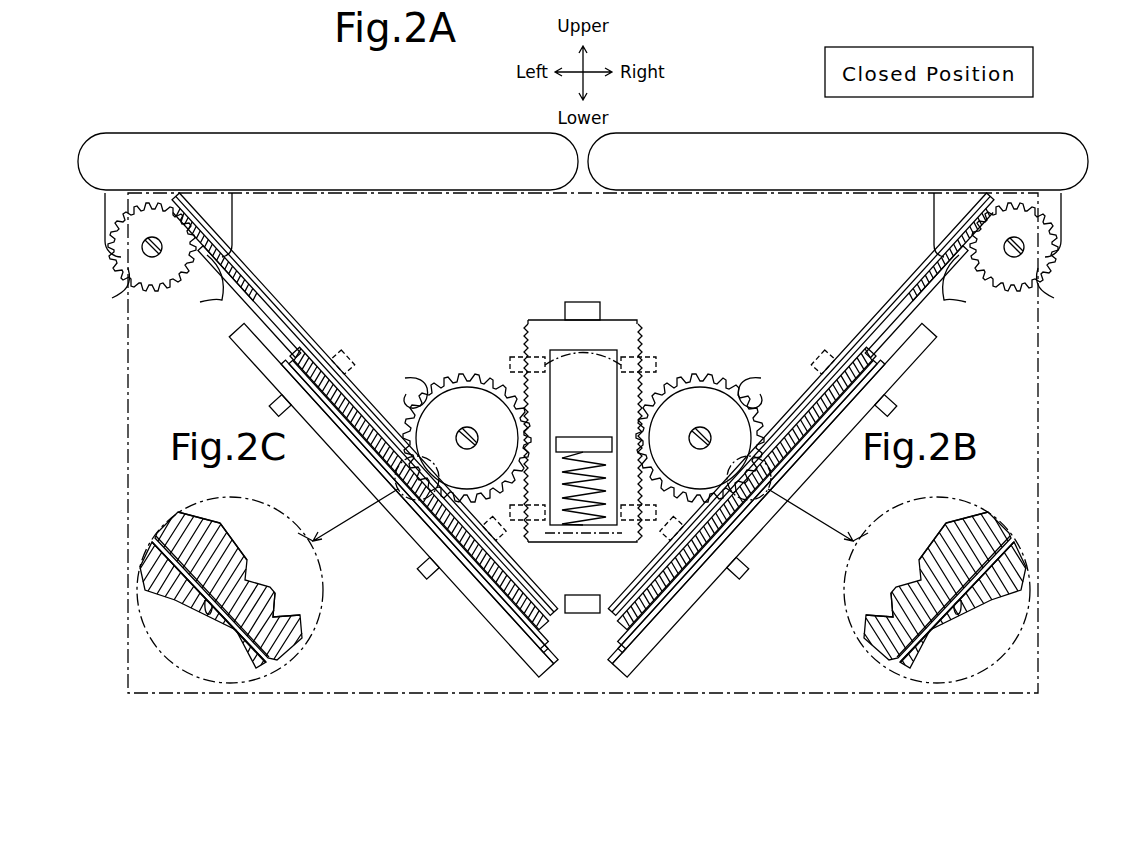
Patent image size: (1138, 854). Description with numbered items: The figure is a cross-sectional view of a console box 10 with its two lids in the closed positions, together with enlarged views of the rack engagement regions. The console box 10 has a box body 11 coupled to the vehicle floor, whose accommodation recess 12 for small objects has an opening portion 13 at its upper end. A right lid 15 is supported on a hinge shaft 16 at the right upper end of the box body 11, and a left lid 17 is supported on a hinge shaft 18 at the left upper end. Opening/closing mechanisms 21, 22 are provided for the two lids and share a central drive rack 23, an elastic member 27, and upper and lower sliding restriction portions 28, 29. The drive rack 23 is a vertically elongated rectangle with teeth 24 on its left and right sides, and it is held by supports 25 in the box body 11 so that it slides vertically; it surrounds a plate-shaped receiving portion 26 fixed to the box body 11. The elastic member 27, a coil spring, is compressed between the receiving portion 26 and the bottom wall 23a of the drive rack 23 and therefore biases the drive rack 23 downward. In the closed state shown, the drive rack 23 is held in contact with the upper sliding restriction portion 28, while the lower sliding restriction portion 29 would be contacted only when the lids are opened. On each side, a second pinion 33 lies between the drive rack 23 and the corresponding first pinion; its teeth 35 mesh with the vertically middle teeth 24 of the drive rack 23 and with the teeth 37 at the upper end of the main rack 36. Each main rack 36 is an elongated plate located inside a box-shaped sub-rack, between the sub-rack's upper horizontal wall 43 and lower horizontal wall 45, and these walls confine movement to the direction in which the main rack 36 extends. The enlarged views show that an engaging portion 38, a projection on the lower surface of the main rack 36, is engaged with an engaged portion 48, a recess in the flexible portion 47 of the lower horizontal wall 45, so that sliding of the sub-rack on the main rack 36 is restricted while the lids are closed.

In FIG. 2A, the console box 10 is at (227, 107).
In FIG. 2A, the box body 11 is at (1040, 410).
In FIG. 2A, the accommodation recess 12 is at (736, 233).
In FIG. 2A, the opening portion 13 is at (688, 233).
In FIG. 2A, the right lid 15 is at (722, 133).
In FIG. 2A, the hinge shaft 16 is at (1020, 247).
In FIG. 2A, the left lid 17 is at (156, 133).
In FIG. 2A, the hinge shaft 18 is at (150, 256).
In FIG. 2A, the opening/closing mechanism 21 is at (768, 321).
In FIG. 2A, the opening/closing mechanism 22 is at (407, 325).
In FIG. 2A, the drive rack 23 is at (620, 320).
In FIG. 2A, the bottom wall 23a is at (618, 542).
In FIG. 2A, the teeth 24 is at (530, 357).
In FIG. 2A, the supports 25 is at (583, 350).
In FIG. 2A, the receiving portion 26 is at (570, 437).
In FIG. 2A, the elastic member 27 is at (598, 456).
In FIG. 2A, the upper sliding restriction portion 28 is at (585, 302).
In FIG. 2A, the lower sliding restriction portion 29 is at (586, 613).
In FIG. 2C, the second pinion 33 is at (298, 533).
In FIG. 2B, the second pinion 33 is at (861, 515).
In FIG. 2C, the teeth 35 is at (160, 548).
In FIG. 2B, the teeth 35 is at (1011, 543).
In FIG. 2C, the main rack 36 is at (168, 528).
In FIG. 2B, the main rack 36 is at (977, 585).
In FIG. 2C, the teeth 37 is at (285, 603).
In FIG. 2B, the teeth 37 is at (874, 591).
In FIG. 2C, the engaging portion 38 is at (208, 615).
In FIG. 2B, the engaging portion 38 is at (935, 664).
In FIG. 2C, the upper horizontal wall 43 is at (165, 519).
In FIG. 2B, the upper horizontal wall 43 is at (985, 480).
In FIG. 2C, the lower horizontal wall 45 is at (110, 598).
In FIG. 2B, the lower horizontal wall 45 is at (980, 602).
In FIG. 2C, the flexible portion 47 is at (152, 592).
In FIG. 2B, the flexible portion 47 is at (999, 605).
In FIG. 2C, the engaged portion 48 is at (212, 600).
In FIG. 2B, the engaged portion 48 is at (985, 599).